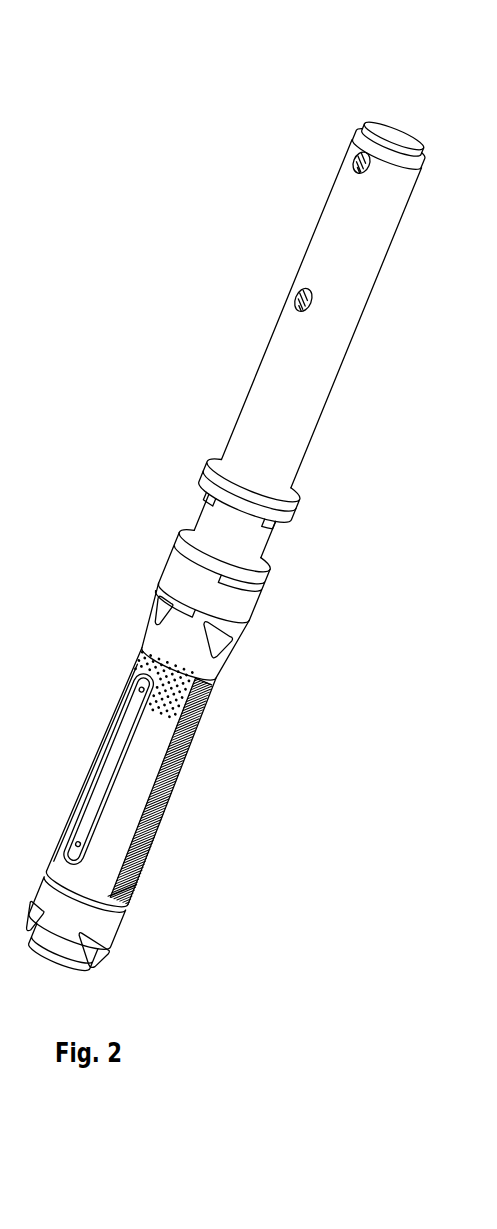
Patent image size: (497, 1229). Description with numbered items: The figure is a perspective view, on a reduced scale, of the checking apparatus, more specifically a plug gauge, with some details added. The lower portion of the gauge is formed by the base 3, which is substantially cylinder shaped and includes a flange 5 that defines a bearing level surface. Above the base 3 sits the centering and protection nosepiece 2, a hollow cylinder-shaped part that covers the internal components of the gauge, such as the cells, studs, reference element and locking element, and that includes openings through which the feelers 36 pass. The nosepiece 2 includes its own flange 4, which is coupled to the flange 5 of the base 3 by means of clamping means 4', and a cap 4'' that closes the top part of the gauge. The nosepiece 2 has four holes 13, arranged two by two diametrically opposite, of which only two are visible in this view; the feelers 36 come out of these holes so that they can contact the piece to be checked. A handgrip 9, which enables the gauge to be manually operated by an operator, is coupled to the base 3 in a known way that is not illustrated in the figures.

The centering and protection nosepiece 2 is at (307, 396).
The base 3 is at (210, 533).
The flange 4 is at (304, 503).
The clamping means 4' is at (322, 556).
The cap 4'' is at (394, 105).
The flange 5 is at (207, 478).
The handgrip 9 is at (212, 667).
The hole 13 is at (362, 157).
The feelers 36 is at (357, 154).